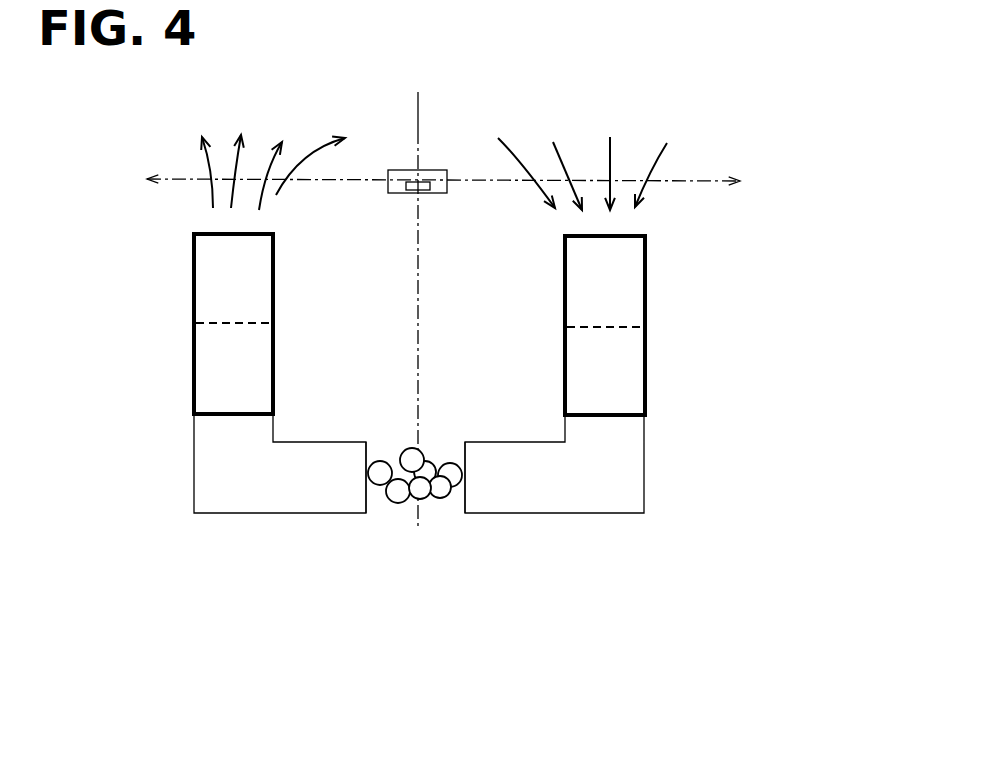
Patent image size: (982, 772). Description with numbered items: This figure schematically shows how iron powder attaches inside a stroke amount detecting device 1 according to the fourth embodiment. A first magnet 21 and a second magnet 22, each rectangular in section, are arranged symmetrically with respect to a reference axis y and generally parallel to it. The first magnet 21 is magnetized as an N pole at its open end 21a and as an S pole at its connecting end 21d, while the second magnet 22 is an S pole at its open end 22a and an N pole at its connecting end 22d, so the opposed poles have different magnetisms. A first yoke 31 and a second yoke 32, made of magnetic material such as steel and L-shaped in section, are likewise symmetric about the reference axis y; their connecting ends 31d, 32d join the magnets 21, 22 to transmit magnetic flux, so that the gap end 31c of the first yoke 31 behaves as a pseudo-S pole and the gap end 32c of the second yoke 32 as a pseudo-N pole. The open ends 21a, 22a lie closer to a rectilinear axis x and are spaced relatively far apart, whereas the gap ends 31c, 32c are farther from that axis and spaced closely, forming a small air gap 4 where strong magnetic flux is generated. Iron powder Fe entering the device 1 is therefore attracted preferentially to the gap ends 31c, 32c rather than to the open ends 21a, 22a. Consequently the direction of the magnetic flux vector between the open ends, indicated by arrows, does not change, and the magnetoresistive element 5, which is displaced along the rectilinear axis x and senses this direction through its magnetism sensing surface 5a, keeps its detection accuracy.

The stroke amount detecting device 1 is at (717, 162).
The small air gap 4 is at (402, 477).
The magnetoresistive element 5 is at (408, 170).
The magnetism sensing surface 5a is at (410, 190).
The first magnet 21 is at (210, 306).
The open end of first magnet 21a is at (205, 232).
The connecting end of first magnet 21d is at (230, 416).
The second magnet 22 is at (630, 312).
The open end of second magnet 22a is at (612, 237).
The connecting end of second magnet 22d is at (605, 418).
The first yoke 31 is at (222, 500).
The gap end of first yoke 31c is at (378, 493).
The connecting end of first yoke 31d is at (212, 412).
The second yoke 32 is at (593, 488).
The gap end of second yoke 32c is at (450, 498).
The connecting end of second yoke 32d is at (623, 415).
The iron powder Fe is at (418, 493).
The rectilinear axis x is at (710, 183).
The reference axis y is at (418, 105).